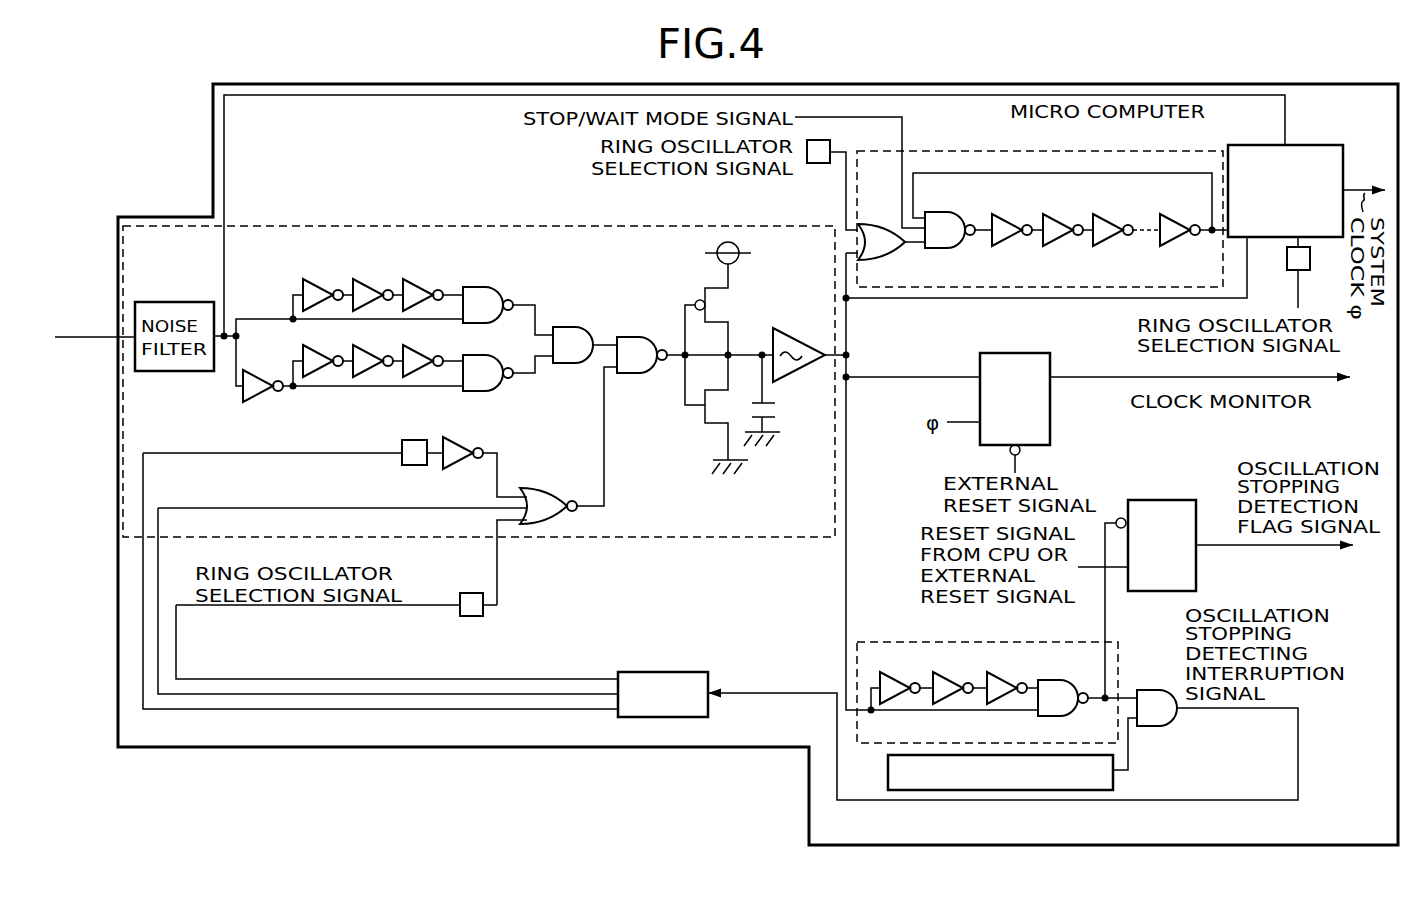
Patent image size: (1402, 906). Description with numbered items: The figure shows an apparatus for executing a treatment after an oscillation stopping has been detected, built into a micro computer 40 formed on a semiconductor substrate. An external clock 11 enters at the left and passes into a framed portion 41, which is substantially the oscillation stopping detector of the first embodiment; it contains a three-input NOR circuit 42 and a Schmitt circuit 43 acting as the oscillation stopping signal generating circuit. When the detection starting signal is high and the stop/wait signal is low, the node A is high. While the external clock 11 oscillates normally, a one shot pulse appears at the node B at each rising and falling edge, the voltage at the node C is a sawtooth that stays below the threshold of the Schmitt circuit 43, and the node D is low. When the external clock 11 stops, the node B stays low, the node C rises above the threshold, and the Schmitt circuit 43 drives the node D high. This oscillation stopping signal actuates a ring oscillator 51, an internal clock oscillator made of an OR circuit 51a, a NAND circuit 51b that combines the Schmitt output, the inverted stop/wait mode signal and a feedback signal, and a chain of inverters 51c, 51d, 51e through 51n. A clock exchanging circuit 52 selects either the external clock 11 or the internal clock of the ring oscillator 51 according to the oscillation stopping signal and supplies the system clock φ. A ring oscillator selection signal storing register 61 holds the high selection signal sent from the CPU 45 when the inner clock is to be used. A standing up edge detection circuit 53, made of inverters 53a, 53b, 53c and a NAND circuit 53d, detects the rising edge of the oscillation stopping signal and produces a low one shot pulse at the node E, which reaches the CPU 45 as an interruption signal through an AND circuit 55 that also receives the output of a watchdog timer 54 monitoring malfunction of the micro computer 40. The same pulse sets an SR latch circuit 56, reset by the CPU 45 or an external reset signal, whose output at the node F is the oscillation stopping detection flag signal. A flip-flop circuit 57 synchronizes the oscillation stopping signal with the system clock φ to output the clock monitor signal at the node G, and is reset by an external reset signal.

The external clock 11 is at (92, 335).
The micro computer 40 is at (212, 158).
The framed portion 41 is at (258, 226).
The NOR circuit 42 is at (543, 489).
The Schmitt circuit 43 is at (788, 378).
The CPU 45 is at (681, 672).
The ring oscillator 51 is at (975, 134).
The OR circuit 51a is at (896, 256).
The NAND circuit 51b is at (953, 248).
The inverter 51c is at (1003, 216).
The inverter 51d is at (1063, 244).
The inverter 51e is at (1107, 216).
The inverter 51n is at (1178, 244).
The clock exchanging circuit 52 is at (1322, 143).
The standing up edge detection circuit 53 is at (904, 626).
The inverter 53a is at (898, 679).
The inverter 53b is at (951, 706).
The inverter 53c is at (1005, 679).
The NAND circuit 53d is at (1057, 715).
The watchdog timer 54 is at (1115, 781).
The AND circuit 55 is at (1177, 726).
The SR latch circuit 56 is at (1176, 500).
The flip-flop circuit 57 is at (1051, 427).
The ring oscillator selection signal storing register 61 is at (818, 163).
The node A is at (605, 433).
The node B is at (678, 347).
The node C is at (763, 347).
The node D is at (833, 348).
The node E is at (1098, 674).
The node F is at (1209, 541).
The node G is at (1073, 375).